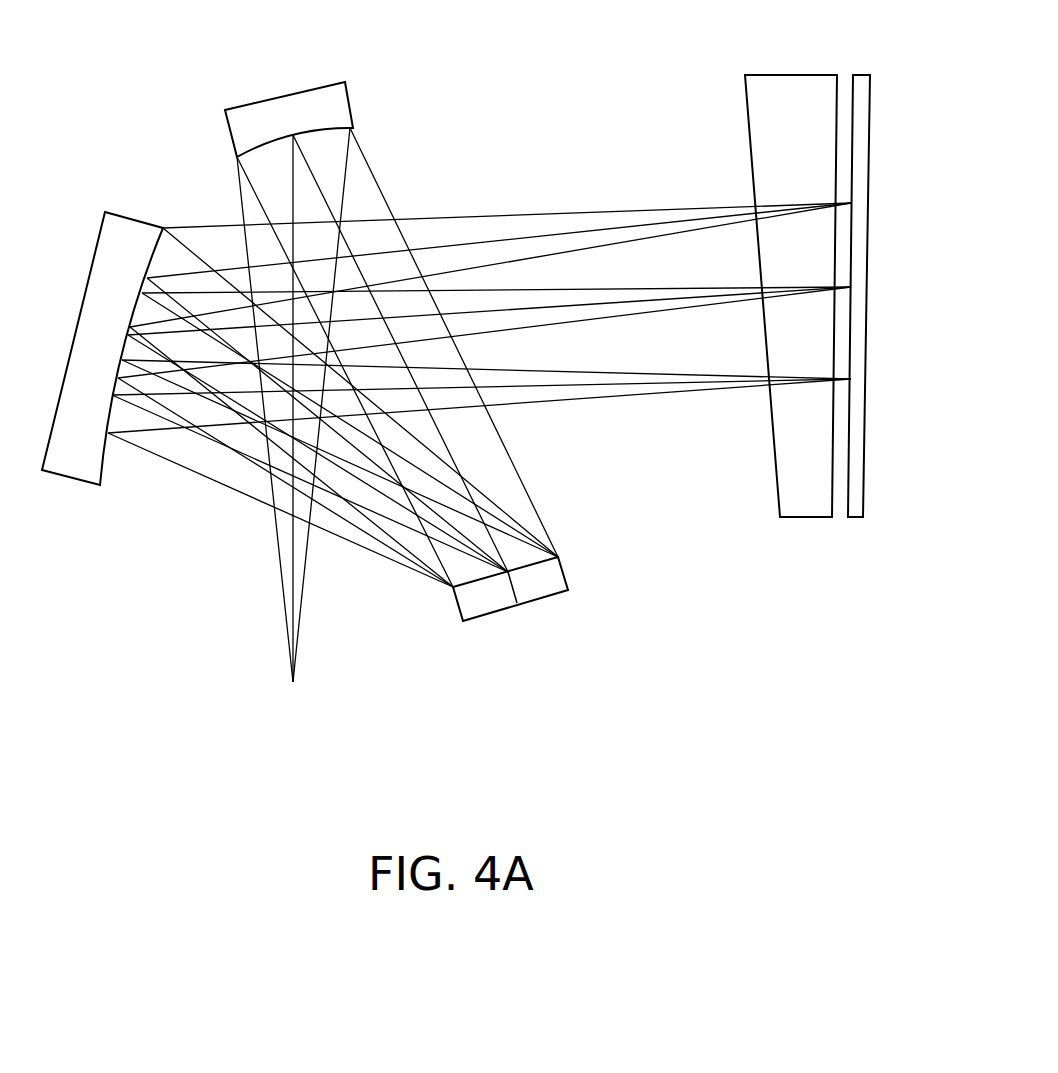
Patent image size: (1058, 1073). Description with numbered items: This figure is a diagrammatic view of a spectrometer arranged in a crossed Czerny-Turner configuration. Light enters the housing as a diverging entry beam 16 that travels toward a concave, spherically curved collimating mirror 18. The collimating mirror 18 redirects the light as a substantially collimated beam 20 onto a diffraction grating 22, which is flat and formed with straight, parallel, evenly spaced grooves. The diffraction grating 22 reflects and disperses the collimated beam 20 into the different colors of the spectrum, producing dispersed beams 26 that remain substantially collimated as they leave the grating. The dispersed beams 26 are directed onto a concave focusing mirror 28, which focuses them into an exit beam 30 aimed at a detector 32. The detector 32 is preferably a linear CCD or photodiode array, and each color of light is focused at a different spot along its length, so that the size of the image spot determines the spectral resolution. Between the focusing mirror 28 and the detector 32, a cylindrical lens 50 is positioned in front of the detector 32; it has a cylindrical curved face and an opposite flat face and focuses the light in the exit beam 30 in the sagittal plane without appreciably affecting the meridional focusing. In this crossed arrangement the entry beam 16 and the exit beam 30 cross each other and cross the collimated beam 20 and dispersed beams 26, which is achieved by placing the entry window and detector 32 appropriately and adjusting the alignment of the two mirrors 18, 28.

The entry beam 16 is at (281, 580).
The collimating mirror 18 is at (293, 112).
The collimated beam 20 is at (381, 184).
The diffraction grating 22 is at (488, 598).
The dispersed beams 26 is at (183, 468).
The focusing mirror 28 is at (103, 265).
The exit beam 30 is at (594, 212).
The detector 32 is at (862, 103).
The cylindrical lens 50 is at (745, 100).